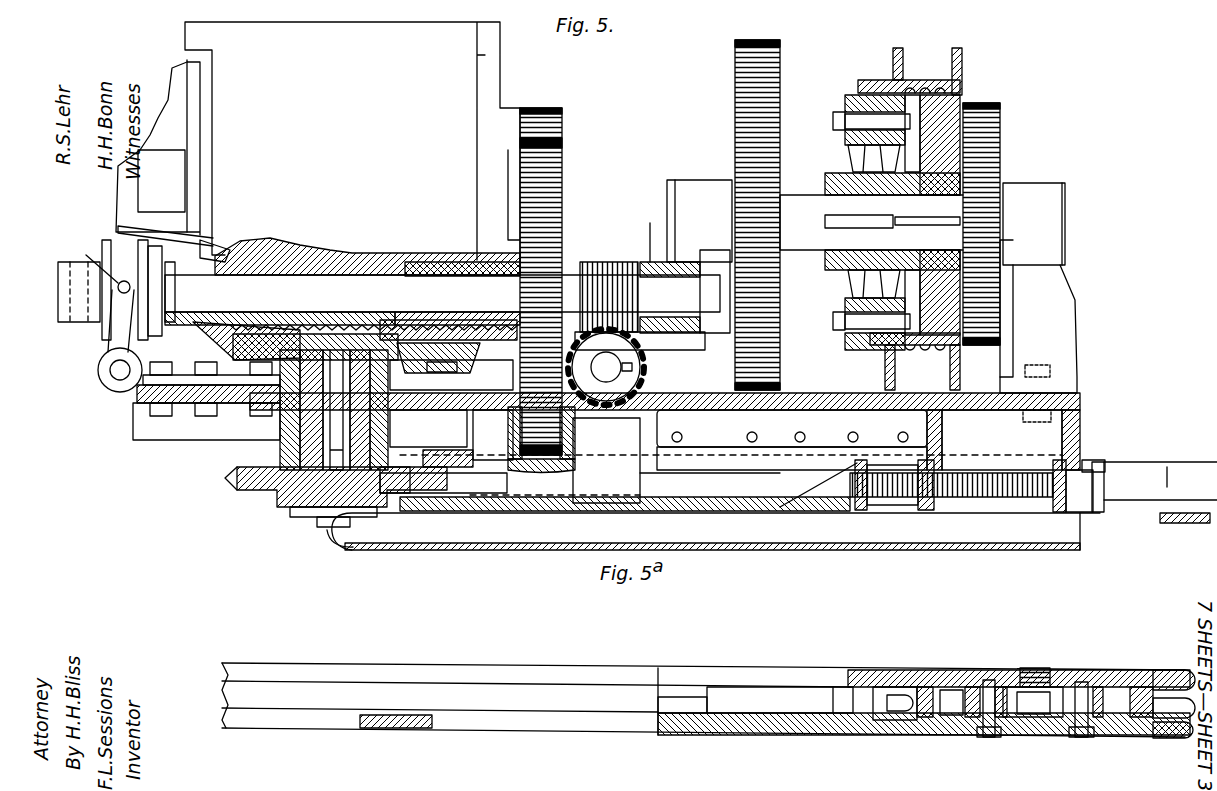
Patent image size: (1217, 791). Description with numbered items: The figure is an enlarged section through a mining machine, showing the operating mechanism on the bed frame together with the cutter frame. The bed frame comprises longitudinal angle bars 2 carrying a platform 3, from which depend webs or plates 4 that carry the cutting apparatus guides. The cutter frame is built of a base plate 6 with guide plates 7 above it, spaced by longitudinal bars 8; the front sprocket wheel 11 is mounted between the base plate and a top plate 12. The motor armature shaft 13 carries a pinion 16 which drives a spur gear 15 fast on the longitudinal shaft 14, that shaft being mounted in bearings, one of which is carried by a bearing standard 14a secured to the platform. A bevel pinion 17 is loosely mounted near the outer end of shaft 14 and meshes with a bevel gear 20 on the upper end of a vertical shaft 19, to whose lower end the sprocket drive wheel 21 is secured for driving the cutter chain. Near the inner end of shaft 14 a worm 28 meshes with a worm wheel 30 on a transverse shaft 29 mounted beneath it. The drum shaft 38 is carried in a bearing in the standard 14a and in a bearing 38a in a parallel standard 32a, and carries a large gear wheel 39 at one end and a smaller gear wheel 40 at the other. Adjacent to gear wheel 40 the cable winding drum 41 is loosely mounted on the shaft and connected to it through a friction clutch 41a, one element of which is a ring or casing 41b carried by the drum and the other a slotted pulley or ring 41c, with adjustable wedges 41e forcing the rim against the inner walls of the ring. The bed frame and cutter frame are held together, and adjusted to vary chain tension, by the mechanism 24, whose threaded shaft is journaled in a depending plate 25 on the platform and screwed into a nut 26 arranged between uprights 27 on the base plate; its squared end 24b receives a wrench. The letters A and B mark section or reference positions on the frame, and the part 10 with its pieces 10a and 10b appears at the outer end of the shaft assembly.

In FIG. 5, the guard plate 10a is at (157, 212).
In FIG. 5, the lever bar 10 is at (165, 241).
In FIG. 5, the knob and roller 10b is at (118, 275).
In FIG. 5, the bevel pinion 17 is at (250, 252).
In FIG. 5, the longitudinally arranged shaft 14 is at (442, 302).
In FIG. 5, the bearing standard 14a is at (636, 230).
In FIG. 5, the bevel gear 20 is at (355, 355).
In FIG. 5, the platform 3 is at (200, 403).
In FIG. 5, the vertically disposed shaft 19 is at (280, 438).
In FIG. 5, the sprocket drive wheel 21 is at (272, 487).
In FIG. 5, the armature shaft 13 is at (562, 146).
In FIG. 5, the pinion 16 is at (556, 116).
In FIG. 5, the spur gear 15 is at (552, 264).
In FIG. 5, the worm gear 28 is at (610, 262).
In FIG. 5, the transverse shaft 29 is at (604, 378).
In FIG. 5, the worm wheel 30 is at (624, 385).
In FIG. 5, the gear wheel 39 is at (735, 60).
In FIG. 5, the drum shaft 38 is at (802, 212).
In FIG. 5, the bearing 38a is at (1043, 190).
In FIG. 5, the cable winding drum 41 is at (960, 88).
In FIG. 5, the friction clutch 41a is at (880, 60).
In FIG. 5, the ring or casing 41b is at (919, 59).
In FIG. 5, the pulley or ring 41c is at (850, 100).
In FIG. 5, the adjustable wedges or expanders 41e is at (840, 130).
In FIG. 5, the gear wheel 40 is at (985, 136).
In FIG. 5, the bearing standard 32a is at (1050, 335).
In FIG. 5, the webs or plates 4 is at (1050, 447).
In FIG. 5, the adjusting mechanism 24 is at (990, 463).
In FIG. 5, the squared end 24b is at (1120, 506).
In FIG. 5, the upright or projection 27 is at (835, 505).
In FIG. 5, the threaded nut 26 is at (905, 505).
In FIG. 5, the depending plate 25 is at (1092, 470).
In FIG. 5, the guide plates 7 is at (1160, 481).
In FIG. 5, the section line B is at (1178, 440).
In FIG. 5a, the section line B is at (774, 653).
In FIG. 5, the angle bars or plates 2 is at (1063, 540).
In FIG. 5, the base plate 6 is at (713, 505).
In FIG. 5a, the base plate 6 is at (498, 725).
In FIG. 5, the section line A is at (470, 560).
In FIG. 5a, the bars 8 is at (410, 690).
In FIG. 5a, the top plate 12 is at (903, 678).
In FIG. 5a, the front sprocket wheel 11 is at (1147, 700).